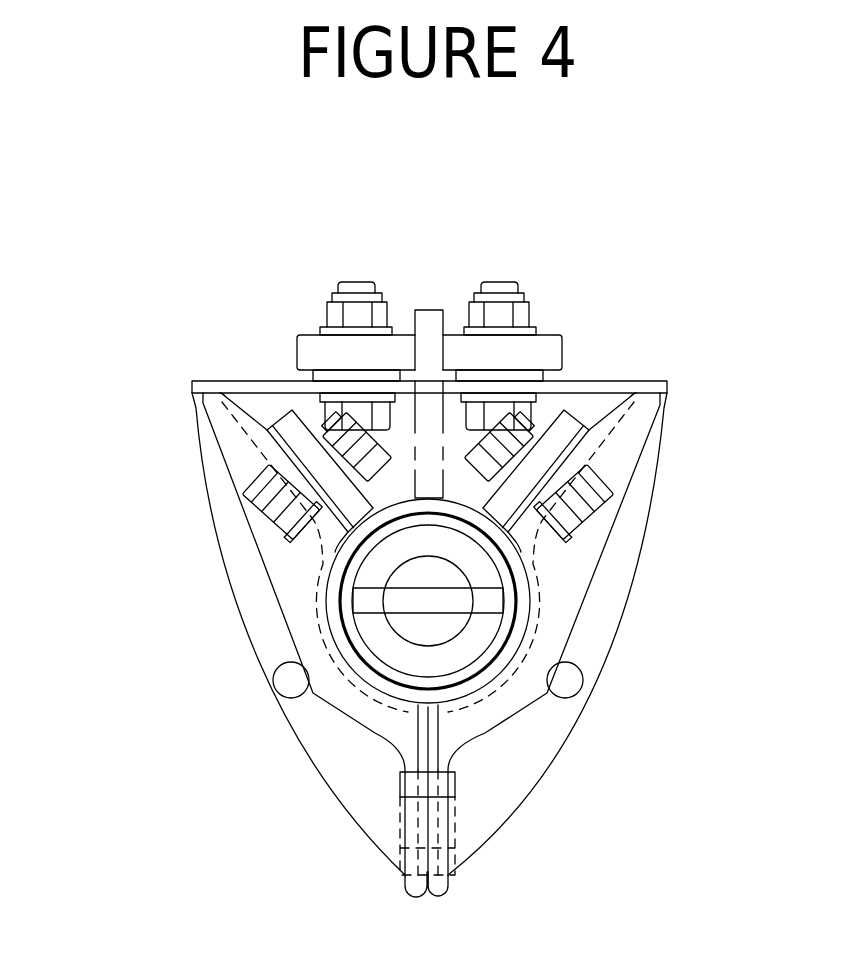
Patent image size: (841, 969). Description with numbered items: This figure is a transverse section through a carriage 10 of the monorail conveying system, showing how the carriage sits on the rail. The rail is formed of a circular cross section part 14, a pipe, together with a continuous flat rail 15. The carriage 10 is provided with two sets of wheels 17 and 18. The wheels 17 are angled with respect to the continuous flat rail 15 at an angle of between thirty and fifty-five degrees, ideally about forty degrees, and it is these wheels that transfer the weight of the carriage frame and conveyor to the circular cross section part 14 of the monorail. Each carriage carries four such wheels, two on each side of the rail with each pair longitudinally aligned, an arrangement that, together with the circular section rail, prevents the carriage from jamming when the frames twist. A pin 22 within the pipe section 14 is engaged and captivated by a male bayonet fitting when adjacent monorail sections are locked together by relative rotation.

The carriage 10 is at (645, 532).
The circular cross section part of the monorail 14 is at (494, 662).
The continuous flat rail 15 is at (445, 308).
The wheels 17 is at (265, 432).
The wheels 18 is at (562, 335).
The pin 22 is at (372, 600).